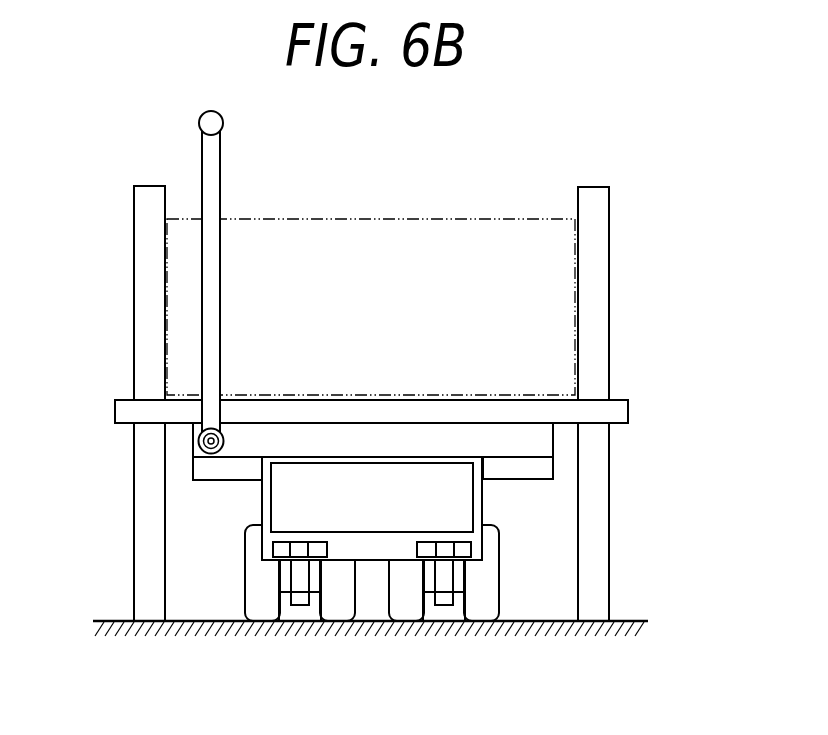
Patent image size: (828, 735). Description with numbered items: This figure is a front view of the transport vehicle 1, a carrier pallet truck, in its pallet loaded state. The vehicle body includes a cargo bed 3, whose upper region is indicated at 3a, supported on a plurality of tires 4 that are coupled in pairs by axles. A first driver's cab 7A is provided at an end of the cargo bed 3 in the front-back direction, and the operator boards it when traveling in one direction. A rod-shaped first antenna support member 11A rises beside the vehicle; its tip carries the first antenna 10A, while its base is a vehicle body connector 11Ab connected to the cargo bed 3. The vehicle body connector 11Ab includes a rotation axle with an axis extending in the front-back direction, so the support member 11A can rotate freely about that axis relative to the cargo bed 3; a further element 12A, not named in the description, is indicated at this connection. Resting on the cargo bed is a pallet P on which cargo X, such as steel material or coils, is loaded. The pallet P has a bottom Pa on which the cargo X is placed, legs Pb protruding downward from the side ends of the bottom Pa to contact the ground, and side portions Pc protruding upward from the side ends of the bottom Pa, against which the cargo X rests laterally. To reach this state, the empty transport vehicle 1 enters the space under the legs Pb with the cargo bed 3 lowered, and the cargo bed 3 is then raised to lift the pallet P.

The transport vehicle 1 is at (370, 408).
The cargo bed 3 is at (555, 443).
The upper surface of frame 3a is at (375, 423).
The tires 4 is at (265, 613).
The first driver's cab 7A is at (483, 497).
The first antenna 10A is at (198, 125).
The first antenna support member 11A is at (144, 308).
The vehicle body connector 11Ab is at (203, 455).
The pivot pin 12A is at (199, 440).
The pallet P is at (402, 365).
The bottom Pa is at (620, 412).
The legs Pb is at (603, 533).
The side portions Pc is at (612, 288).
The cargo X is at (383, 218).